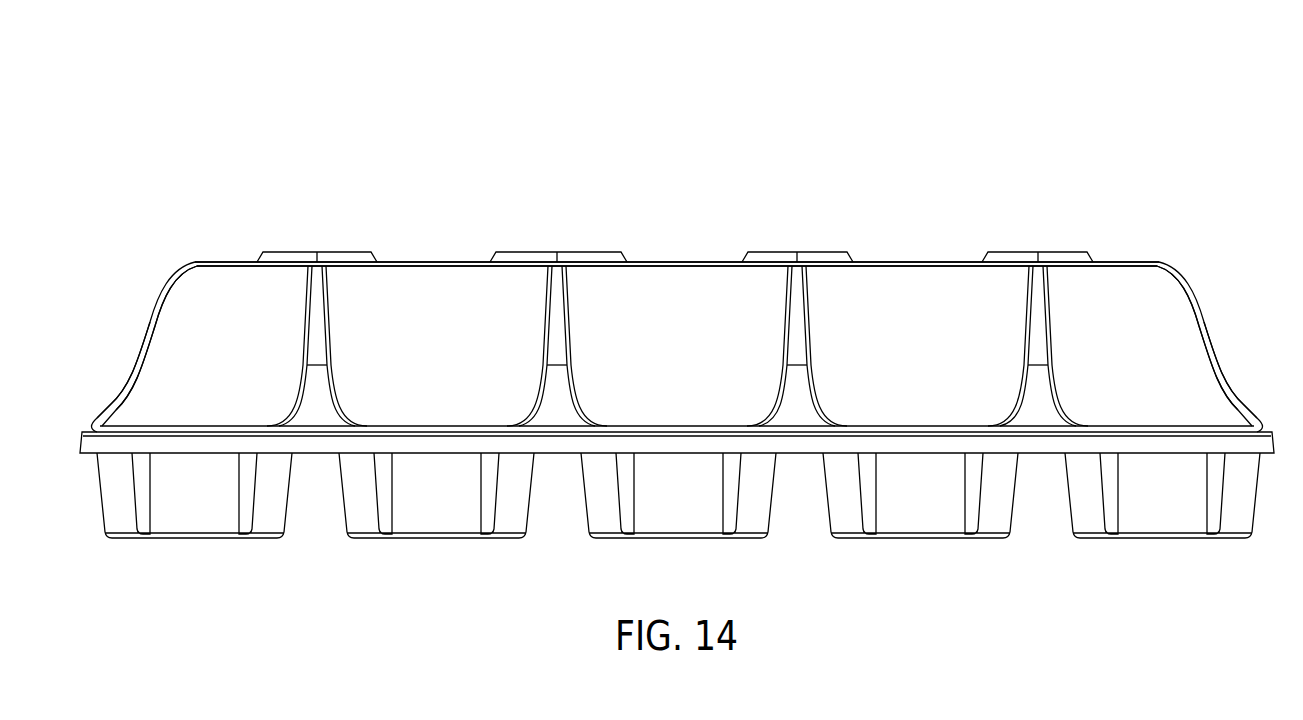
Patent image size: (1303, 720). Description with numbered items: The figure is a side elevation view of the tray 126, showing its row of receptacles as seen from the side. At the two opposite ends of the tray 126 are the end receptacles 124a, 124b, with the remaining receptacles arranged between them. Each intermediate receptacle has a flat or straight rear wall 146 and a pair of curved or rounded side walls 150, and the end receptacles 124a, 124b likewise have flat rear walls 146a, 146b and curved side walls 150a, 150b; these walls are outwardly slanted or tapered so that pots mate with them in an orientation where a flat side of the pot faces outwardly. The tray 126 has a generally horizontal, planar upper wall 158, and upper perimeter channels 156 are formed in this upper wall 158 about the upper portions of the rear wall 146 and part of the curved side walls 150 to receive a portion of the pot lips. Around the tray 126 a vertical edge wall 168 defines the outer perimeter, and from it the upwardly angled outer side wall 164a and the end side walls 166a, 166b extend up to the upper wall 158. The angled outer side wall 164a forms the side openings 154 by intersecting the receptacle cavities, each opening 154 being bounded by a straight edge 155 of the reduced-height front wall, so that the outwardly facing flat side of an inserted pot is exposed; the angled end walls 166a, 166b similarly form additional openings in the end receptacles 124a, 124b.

The tray 126 is at (178, 120).
The end receptacle 124a is at (142, 402).
The end receptacle 124b is at (1210, 402).
The rear wall 146 is at (452, 359).
The rear wall 146a is at (241, 359).
The rear wall 146b is at (1152, 359).
The curved side wall 150 is at (327, 298).
The curved side wall 150a is at (307, 306).
The curved side wall 150b is at (1048, 307).
The side opening 154 is at (462, 415).
The straight edge 155 is at (722, 426).
The upper perimeter channel 156 is at (647, 262).
The upper wall 158 is at (527, 258).
The outer side wall 164a is at (800, 397).
The end side wall 166a is at (1210, 340).
The end side wall 166b is at (147, 334).
The vertical edge wall 168 is at (212, 443).